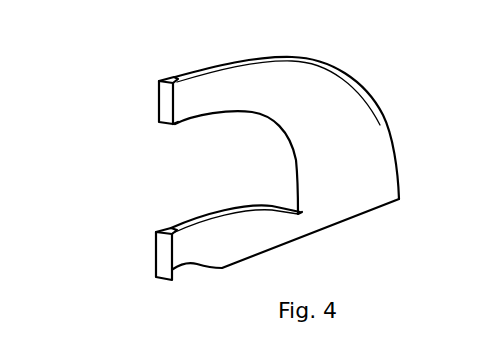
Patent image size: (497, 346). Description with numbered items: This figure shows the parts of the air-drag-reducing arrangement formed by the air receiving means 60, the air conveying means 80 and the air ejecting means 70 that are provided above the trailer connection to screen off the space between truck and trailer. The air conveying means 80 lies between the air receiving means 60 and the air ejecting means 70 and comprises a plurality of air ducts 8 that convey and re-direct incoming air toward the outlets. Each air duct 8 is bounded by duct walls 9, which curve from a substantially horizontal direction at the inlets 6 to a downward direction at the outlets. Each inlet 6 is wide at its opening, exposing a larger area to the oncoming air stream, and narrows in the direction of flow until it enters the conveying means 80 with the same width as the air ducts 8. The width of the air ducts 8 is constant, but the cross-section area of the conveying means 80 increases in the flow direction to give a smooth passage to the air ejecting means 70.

The means for conveying air 80 is at (353, 200).
The air duct 8 is at (263, 108).
The inlet 6 is at (159, 92).
The air receiving means 60 is at (147, 121).
The duct wall 9 is at (194, 119).
The air ejecting means 70 is at (307, 254).